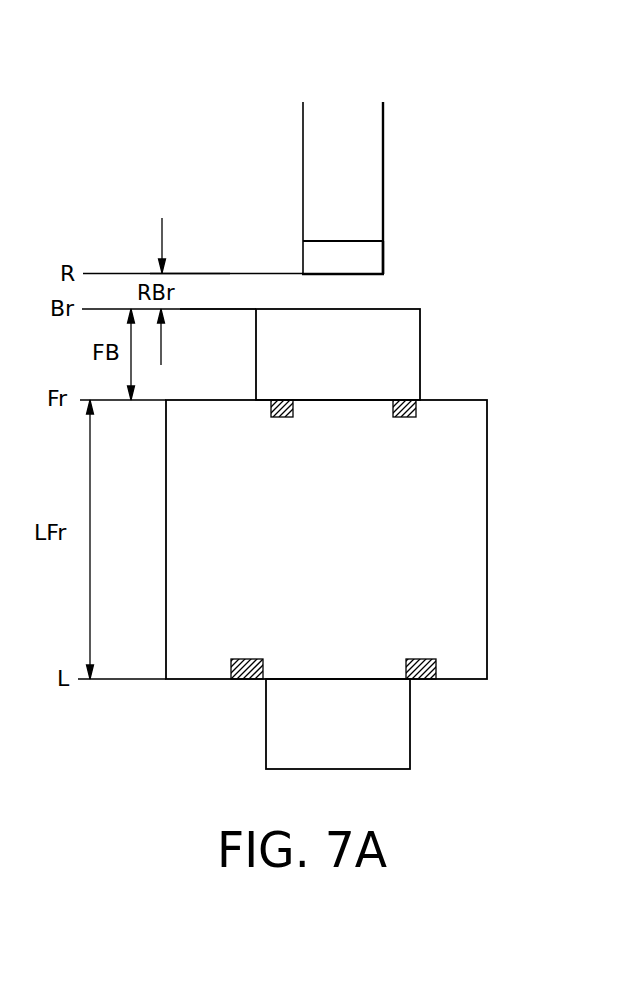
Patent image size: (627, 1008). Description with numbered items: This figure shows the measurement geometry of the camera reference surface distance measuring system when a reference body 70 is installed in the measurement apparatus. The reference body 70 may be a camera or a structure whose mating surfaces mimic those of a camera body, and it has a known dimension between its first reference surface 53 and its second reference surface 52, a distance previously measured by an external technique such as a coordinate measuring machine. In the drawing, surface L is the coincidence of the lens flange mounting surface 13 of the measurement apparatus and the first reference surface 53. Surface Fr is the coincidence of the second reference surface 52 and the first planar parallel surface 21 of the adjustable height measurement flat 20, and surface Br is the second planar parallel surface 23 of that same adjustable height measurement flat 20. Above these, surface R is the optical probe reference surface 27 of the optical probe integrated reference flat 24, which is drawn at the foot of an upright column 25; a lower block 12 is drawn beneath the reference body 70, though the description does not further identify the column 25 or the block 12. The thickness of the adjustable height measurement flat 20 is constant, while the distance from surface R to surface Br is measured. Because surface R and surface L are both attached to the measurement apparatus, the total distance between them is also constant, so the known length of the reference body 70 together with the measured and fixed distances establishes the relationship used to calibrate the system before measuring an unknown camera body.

The lower die / bottom block 12 is at (410, 725).
The lens flange mounting surface 13 is at (267, 681).
The adjustable height measurement flat 20 is at (420, 337).
The first planar parallel surface 21 is at (298, 392).
The second planar parallel surface 23 is at (217, 308).
The optical probe integrated reference flat 24 is at (383, 252).
The column / ram 25 is at (383, 137).
The optical probe reference surface 27 is at (185, 273).
The second reference surface 52 is at (298, 392).
The first reference surface 53 is at (267, 681).
The reference body 70 is at (487, 497).